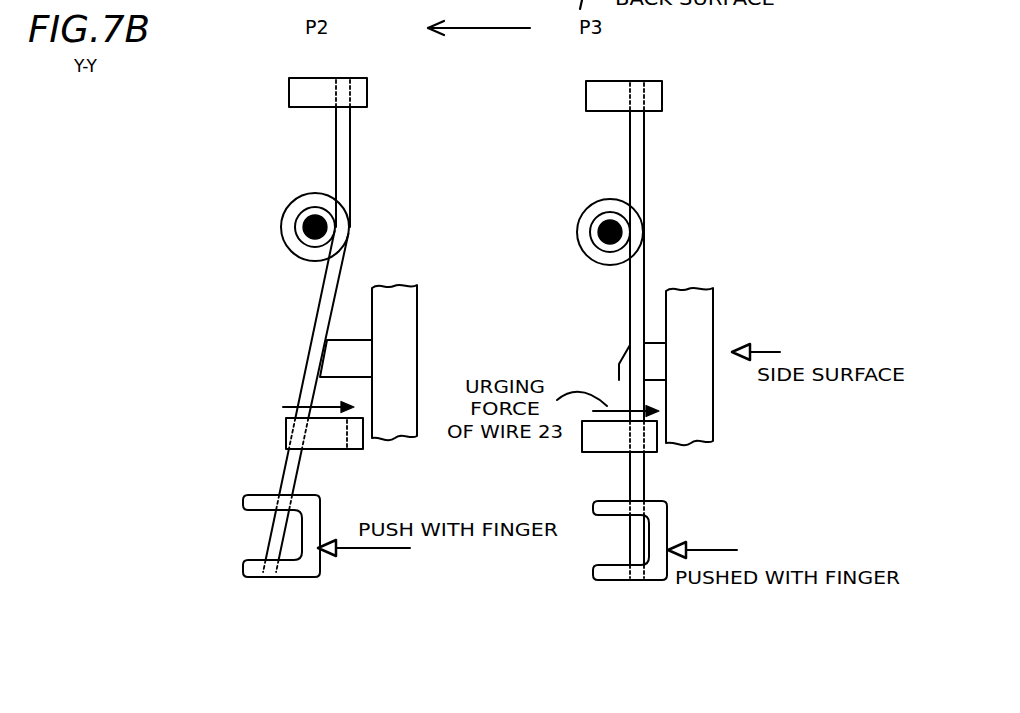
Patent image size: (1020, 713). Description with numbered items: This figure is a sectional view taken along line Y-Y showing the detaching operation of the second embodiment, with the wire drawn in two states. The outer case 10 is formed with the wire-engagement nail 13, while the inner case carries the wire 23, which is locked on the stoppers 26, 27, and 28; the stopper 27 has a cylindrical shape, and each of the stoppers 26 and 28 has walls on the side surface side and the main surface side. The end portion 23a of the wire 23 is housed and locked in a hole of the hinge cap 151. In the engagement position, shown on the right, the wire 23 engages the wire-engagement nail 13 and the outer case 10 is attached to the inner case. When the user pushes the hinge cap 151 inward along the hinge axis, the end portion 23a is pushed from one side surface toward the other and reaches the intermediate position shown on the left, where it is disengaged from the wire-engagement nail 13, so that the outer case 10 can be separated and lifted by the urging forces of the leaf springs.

The outer case 10 is at (398, 286).
The wire-engagement nail 13 is at (350, 340).
The wire 23 is at (305, 366).
The end portion of the wire 23a is at (266, 550).
The stopper 26 is at (286, 431).
The stopper 27 is at (282, 226).
The stopper 28 is at (289, 94).
The hinge cap 151 is at (305, 578).